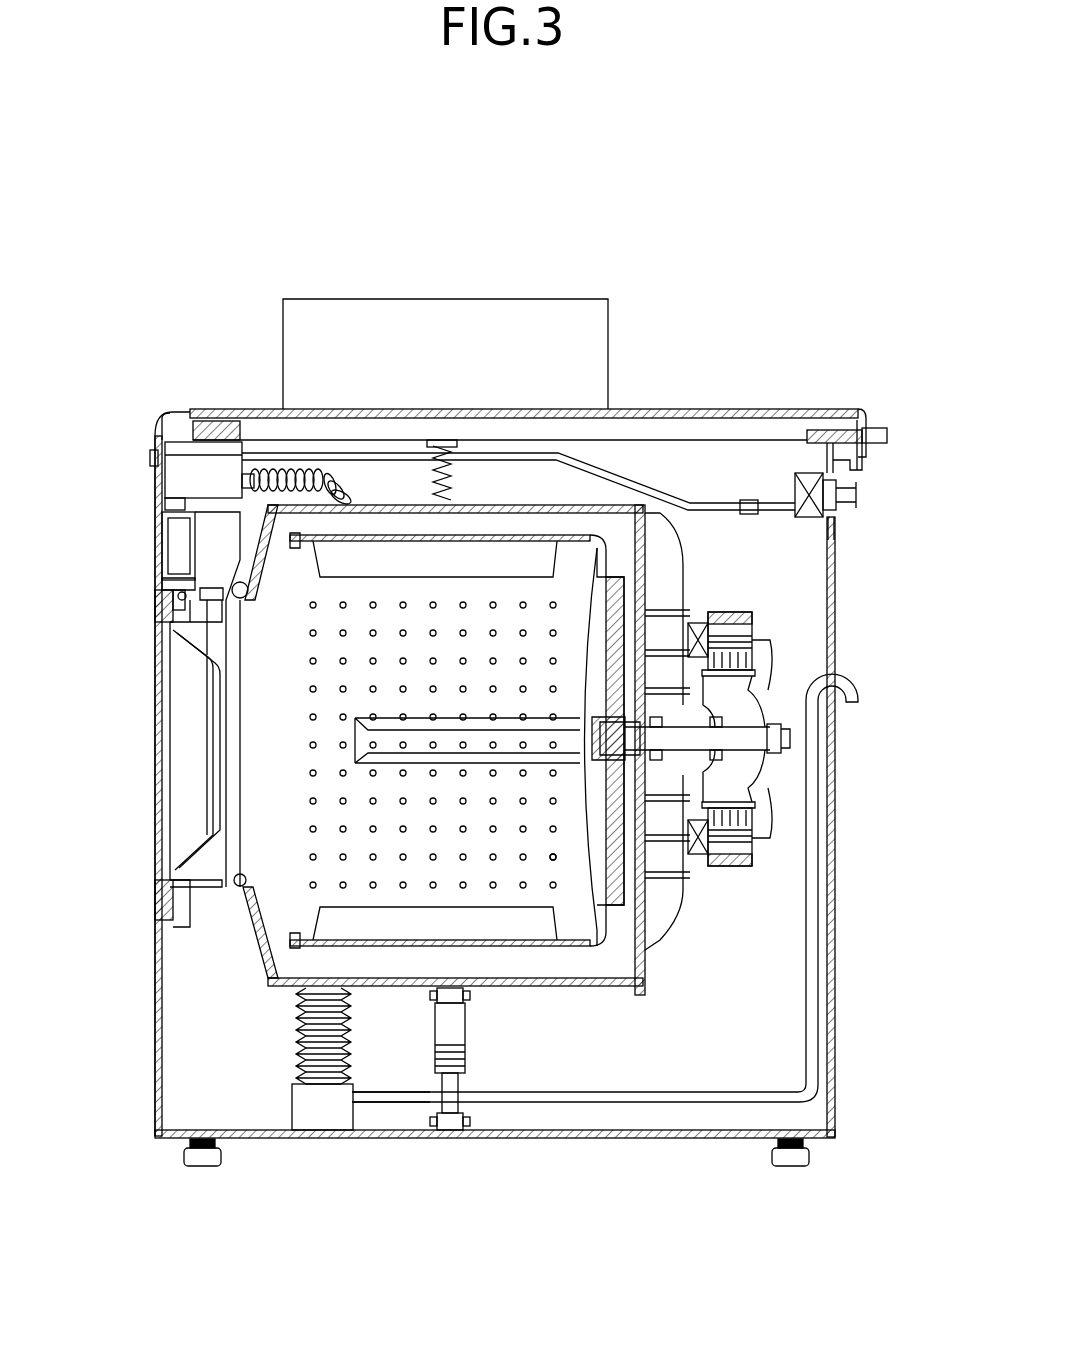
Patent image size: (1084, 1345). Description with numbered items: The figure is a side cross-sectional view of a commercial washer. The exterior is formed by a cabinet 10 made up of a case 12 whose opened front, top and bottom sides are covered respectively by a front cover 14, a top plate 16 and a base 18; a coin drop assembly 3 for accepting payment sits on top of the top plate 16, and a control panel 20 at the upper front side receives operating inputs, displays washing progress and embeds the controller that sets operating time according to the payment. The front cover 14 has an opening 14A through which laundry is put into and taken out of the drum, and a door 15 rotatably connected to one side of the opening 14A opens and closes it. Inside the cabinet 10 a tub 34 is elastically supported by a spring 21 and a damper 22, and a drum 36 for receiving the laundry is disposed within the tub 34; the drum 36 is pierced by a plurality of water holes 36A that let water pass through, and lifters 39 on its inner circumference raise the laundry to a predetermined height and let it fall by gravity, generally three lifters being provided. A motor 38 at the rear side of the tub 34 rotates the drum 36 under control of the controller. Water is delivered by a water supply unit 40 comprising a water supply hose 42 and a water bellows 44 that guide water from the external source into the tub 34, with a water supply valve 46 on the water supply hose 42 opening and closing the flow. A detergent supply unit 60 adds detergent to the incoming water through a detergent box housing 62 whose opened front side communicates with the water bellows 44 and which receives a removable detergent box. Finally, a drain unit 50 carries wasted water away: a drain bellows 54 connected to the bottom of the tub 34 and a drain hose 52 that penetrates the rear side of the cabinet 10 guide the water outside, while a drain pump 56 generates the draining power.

The coin drop assembly 3 is at (410, 363).
The cabinet 10 is at (838, 792).
The case 12 is at (835, 866).
The front cover 14 is at (162, 533).
The opening 14A is at (162, 577).
The door 15 is at (176, 738).
The top plate 16 is at (718, 409).
The base 18 is at (689, 1140).
The control panel 20 is at (165, 437).
The spring 21 is at (441, 440).
The damper 22 is at (455, 1050).
The tub 34 is at (645, 945).
The drum 36 is at (613, 913).
The water holes 36A is at (557, 857).
The motor 38 is at (760, 636).
The lifters 39 is at (540, 925).
The water supply unit 40 is at (818, 519).
The water supply hose 42 is at (622, 478).
The water bellows 44 is at (314, 470).
The water supply valve 46 is at (800, 470).
The drain unit 50 is at (251, 1127).
The drain hose 52 is at (391, 1154).
The drain bellows 54 is at (306, 1060).
The drain pump 56 is at (328, 1110).
The detergent supply unit 60 is at (170, 590).
The detergent box housing 62 is at (253, 473).